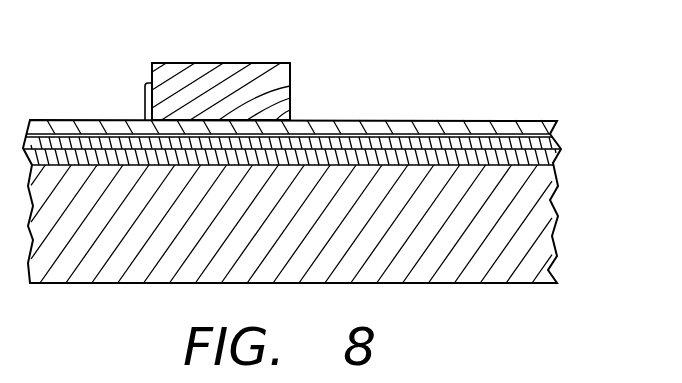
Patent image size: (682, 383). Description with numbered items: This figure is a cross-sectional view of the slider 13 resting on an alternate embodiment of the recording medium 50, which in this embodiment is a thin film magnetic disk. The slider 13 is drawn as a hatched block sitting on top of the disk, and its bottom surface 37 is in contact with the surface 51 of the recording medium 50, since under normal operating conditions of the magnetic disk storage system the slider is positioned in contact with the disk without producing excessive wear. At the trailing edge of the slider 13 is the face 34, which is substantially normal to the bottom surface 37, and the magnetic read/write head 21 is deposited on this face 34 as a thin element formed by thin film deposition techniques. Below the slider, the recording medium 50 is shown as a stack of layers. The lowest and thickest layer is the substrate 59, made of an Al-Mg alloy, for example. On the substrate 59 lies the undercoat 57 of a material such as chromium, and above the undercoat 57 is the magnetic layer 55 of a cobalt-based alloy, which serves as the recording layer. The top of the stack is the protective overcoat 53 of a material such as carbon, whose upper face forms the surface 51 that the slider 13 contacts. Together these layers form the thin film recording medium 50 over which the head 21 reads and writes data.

The slider 13 is at (212, 63).
The magnetic read/write head 21 is at (143, 103).
The face 34 is at (152, 68).
The bottom surface 37 is at (288, 80).
The recording medium 50 is at (368, 107).
The surface 51 is at (452, 120).
The protective overcoat 53 is at (513, 132).
The magnetic layer 55 is at (540, 144).
The undercoat 57 is at (557, 157).
The substrate 59 is at (345, 258).